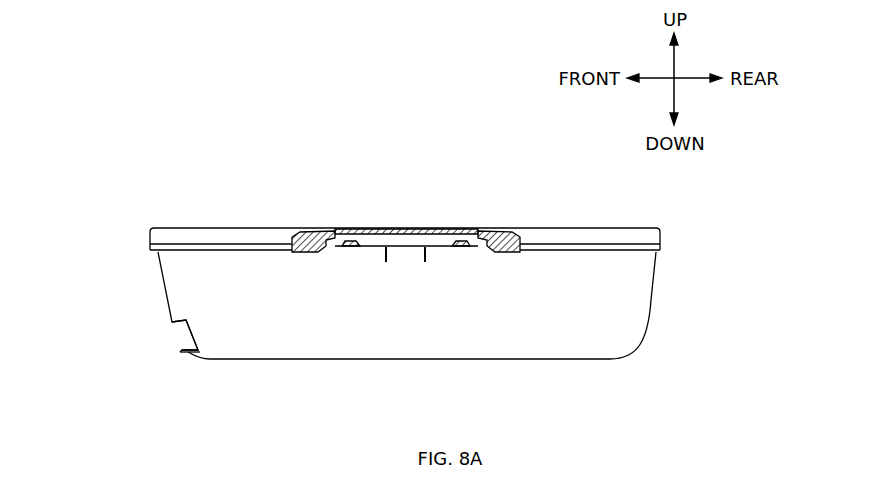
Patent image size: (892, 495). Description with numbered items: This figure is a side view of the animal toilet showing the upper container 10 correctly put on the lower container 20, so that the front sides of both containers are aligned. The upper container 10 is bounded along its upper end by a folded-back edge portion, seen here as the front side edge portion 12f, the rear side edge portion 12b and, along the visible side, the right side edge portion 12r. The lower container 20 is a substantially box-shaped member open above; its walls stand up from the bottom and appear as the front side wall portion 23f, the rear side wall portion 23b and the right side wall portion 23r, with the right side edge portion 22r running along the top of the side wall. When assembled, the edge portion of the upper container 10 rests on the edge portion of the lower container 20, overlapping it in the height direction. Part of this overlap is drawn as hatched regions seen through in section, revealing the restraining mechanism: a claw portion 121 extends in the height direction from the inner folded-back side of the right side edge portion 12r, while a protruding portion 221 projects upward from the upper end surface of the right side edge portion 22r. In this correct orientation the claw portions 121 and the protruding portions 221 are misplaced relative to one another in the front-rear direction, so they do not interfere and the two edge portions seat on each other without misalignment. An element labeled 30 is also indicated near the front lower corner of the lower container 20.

The upper container 10 is at (568, 225).
The right side edge portion 12r is at (217, 230).
The front side edge portion 12f is at (151, 233).
The rear side edge portion 12b is at (660, 236).
The claw portion 121 is at (340, 229).
The protruding portion 221 is at (343, 252).
The lower container 20 is at (557, 362).
The right side edge portion 22r is at (569, 244).
The front side wall portion 23f is at (158, 282).
The rear side wall portion 23b is at (654, 283).
The right side wall portion 23r is at (288, 338).
The tab 30 is at (172, 335).